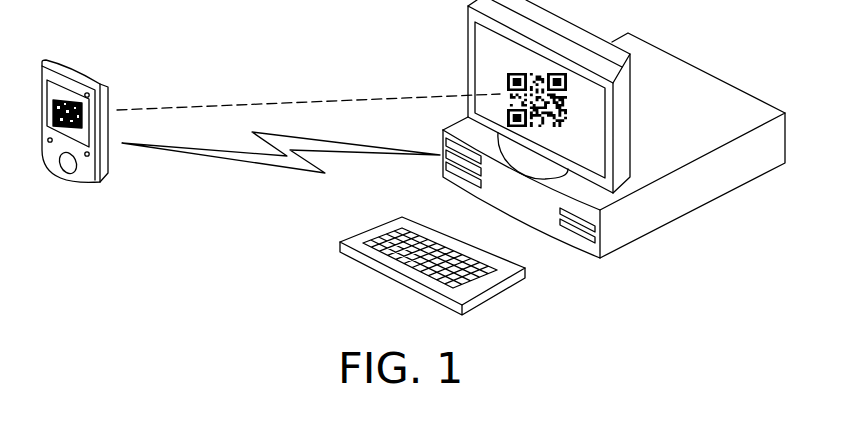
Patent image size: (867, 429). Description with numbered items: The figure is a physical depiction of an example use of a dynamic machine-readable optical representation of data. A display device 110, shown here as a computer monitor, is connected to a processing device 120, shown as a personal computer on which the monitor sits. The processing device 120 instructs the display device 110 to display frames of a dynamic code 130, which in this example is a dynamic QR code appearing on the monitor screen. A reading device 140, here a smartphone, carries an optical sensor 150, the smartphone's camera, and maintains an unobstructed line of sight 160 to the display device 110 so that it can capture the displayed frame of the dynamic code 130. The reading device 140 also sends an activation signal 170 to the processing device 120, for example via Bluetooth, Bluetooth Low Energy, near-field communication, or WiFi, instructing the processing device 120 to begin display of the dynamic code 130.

The display device 110 is at (482, 43).
The processing device 120 is at (690, 212).
The dynamic code 130 is at (500, 90).
The reading device 140 is at (68, 184).
The optical sensor 150 is at (85, 60).
The line of sight 160 is at (311, 102).
The activation signal 170 is at (225, 158).